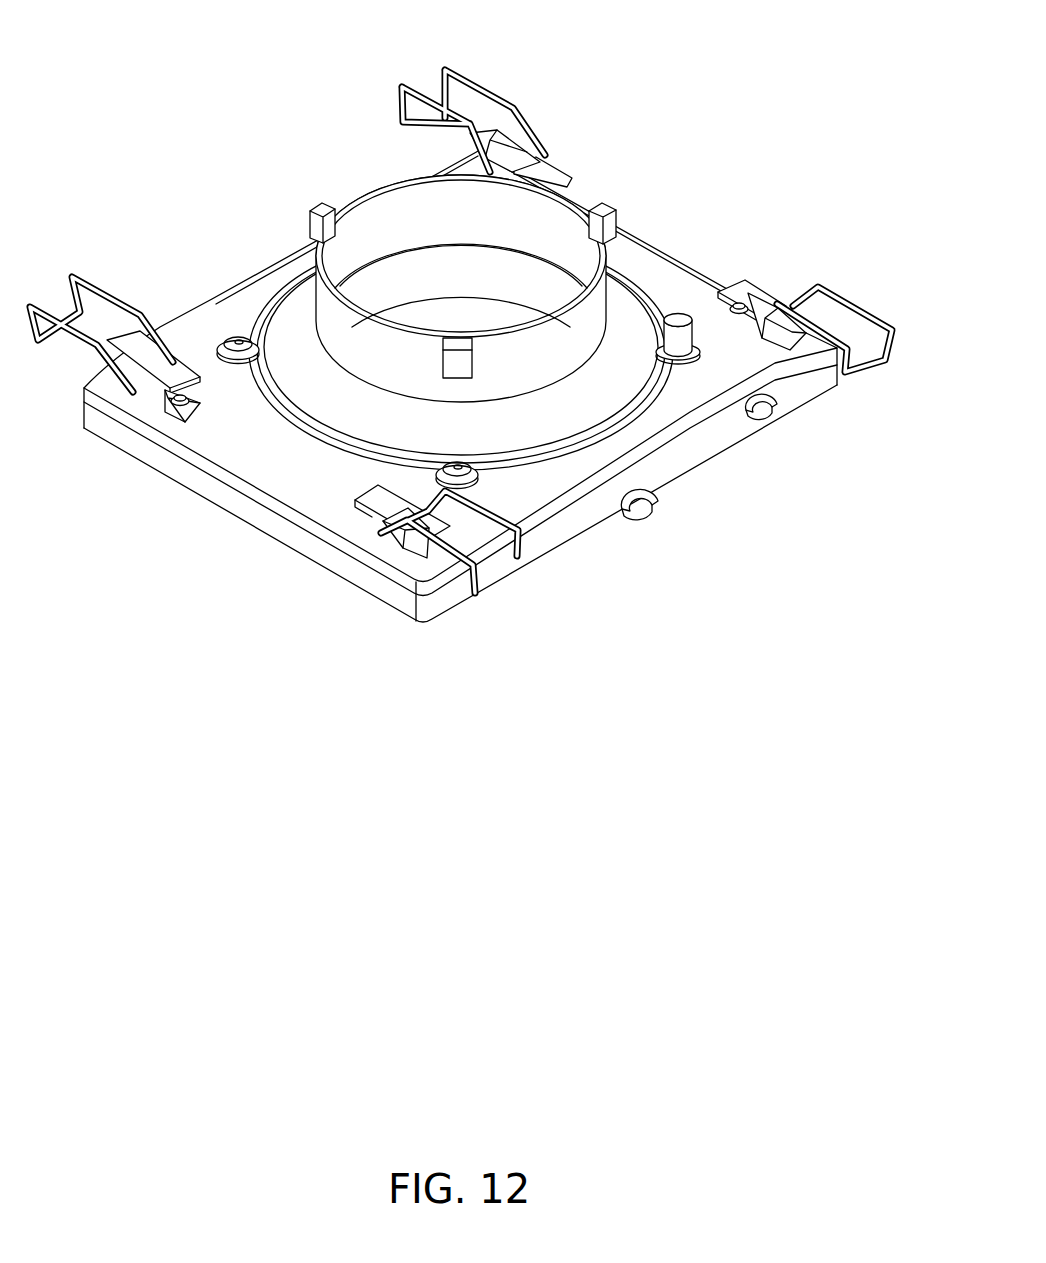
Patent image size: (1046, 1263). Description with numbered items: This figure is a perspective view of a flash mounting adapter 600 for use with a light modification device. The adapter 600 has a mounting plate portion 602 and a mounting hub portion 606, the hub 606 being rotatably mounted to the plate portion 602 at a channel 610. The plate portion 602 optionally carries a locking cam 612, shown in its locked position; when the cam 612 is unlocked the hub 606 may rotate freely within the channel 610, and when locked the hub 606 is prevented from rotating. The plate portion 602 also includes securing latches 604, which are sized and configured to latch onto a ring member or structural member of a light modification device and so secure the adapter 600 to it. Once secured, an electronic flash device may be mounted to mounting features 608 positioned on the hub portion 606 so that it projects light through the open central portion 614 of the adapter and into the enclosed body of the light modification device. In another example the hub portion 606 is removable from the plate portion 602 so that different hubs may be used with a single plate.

The flash mounting adapter 600 is at (723, 63).
The mounting plate portion 602 is at (673, 250).
The securing latches 604 is at (477, 78).
The mounting hub portion 606 is at (543, 450).
The mounting features 608 is at (332, 210).
The channel 610 is at (650, 398).
The locking cam 612 is at (676, 314).
The open central portion 614 is at (430, 217).